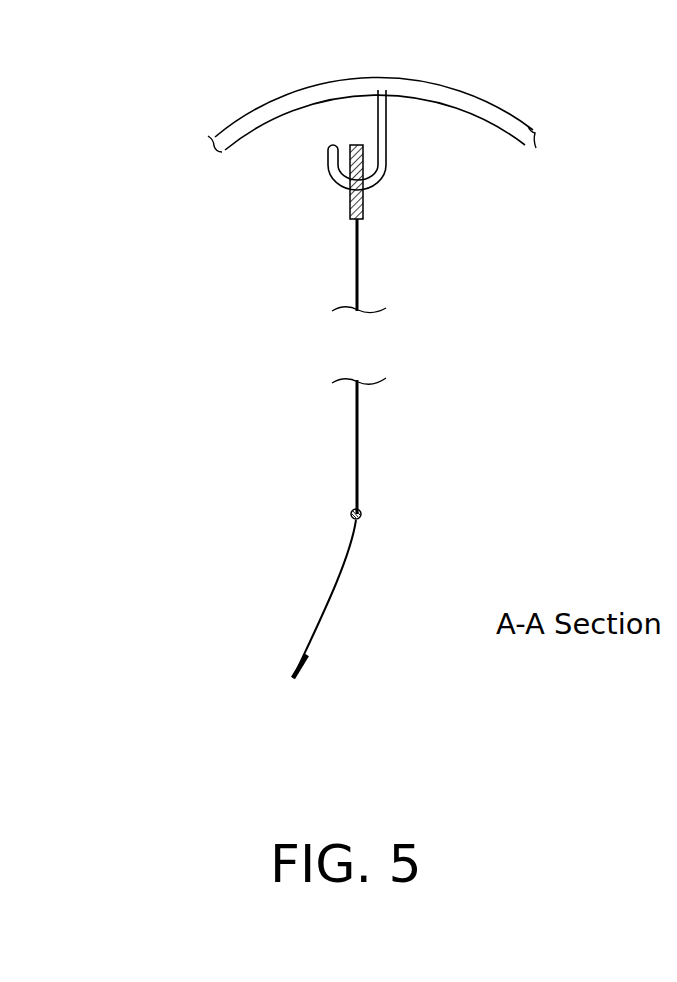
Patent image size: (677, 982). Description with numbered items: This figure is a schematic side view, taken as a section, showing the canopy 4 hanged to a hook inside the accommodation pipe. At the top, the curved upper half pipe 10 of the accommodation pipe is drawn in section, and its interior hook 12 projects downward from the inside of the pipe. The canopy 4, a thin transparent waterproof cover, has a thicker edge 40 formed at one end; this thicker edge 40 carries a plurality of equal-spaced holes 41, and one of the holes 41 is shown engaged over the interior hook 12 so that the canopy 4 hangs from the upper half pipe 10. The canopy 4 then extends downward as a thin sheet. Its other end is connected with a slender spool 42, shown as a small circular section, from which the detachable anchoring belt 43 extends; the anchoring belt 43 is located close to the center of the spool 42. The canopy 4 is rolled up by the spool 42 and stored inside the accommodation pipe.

The upper half pipe 10 is at (480, 101).
The interior hook 12 is at (388, 135).
The canopy 4 is at (344, 444).
The thicker edge 40 is at (363, 205).
The holes 41 is at (350, 194).
The slender spool 42 is at (362, 514).
The anchoring belt 43 is at (333, 600).